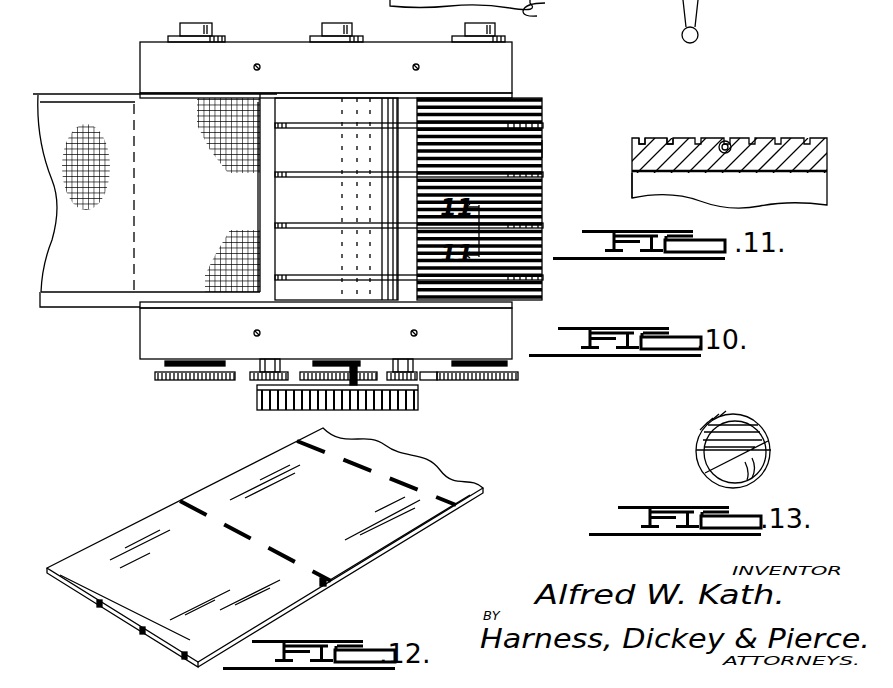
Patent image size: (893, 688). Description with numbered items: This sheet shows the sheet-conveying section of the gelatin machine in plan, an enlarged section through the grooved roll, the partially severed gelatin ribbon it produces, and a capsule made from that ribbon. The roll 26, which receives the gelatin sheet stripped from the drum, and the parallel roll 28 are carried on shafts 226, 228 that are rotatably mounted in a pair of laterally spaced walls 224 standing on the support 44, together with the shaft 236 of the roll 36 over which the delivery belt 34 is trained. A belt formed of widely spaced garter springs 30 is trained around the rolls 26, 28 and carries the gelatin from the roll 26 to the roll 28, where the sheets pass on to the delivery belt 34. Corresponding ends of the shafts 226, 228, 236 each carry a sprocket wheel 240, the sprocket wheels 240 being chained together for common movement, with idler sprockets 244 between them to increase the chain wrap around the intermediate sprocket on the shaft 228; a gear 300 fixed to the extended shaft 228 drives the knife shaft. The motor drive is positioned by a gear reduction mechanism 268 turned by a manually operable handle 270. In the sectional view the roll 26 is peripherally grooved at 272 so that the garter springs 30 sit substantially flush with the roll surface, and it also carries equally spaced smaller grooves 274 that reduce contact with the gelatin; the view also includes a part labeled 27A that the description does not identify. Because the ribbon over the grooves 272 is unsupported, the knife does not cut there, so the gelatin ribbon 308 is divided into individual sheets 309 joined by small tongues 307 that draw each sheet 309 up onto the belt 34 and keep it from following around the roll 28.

In FIG. 10, the walls 224 is at (220, 73).
In FIG. 10, the shaft 226 is at (480, 19).
In FIG. 10, the shaft 228 is at (340, 20).
In FIG. 10, the shaft 236 is at (193, 22).
In FIG. 10, the gear reduction mechanism 268 is at (522, 13).
In FIG. 10, the support 44 is at (550, 14).
In FIG. 10, the handle 270 is at (698, 5).
In FIG. 10, the roll 26 is at (543, 98).
In FIG. 11, the roll 26 is at (633, 170).
In FIG. 10, the plate 27A is at (540, 155).
In FIG. 10, the roll 28 is at (336, 199).
In FIG. 10, the garter springs 30 is at (413, 278).
In FIG. 11, the garter springs 30 is at (724, 140).
In FIG. 10, the delivery belt 34 is at (73, 290).
In FIG. 10, the roll 36 is at (132, 297).
In FIG. 10, the sprocket wheel 240 is at (170, 380).
In FIG. 10, the idler sprocket 244 is at (420, 380).
In FIG. 10, the gear 300 is at (357, 410).
In FIG. 11, the grooves 272 is at (737, 140).
In FIG. 11, the smaller grooves 274 is at (670, 138).
In FIG. 12, the tongues 307 is at (337, 467).
In FIG. 12, the gelatin ribbon 308 is at (236, 473).
In FIG. 12, the sheets 309 is at (200, 592).